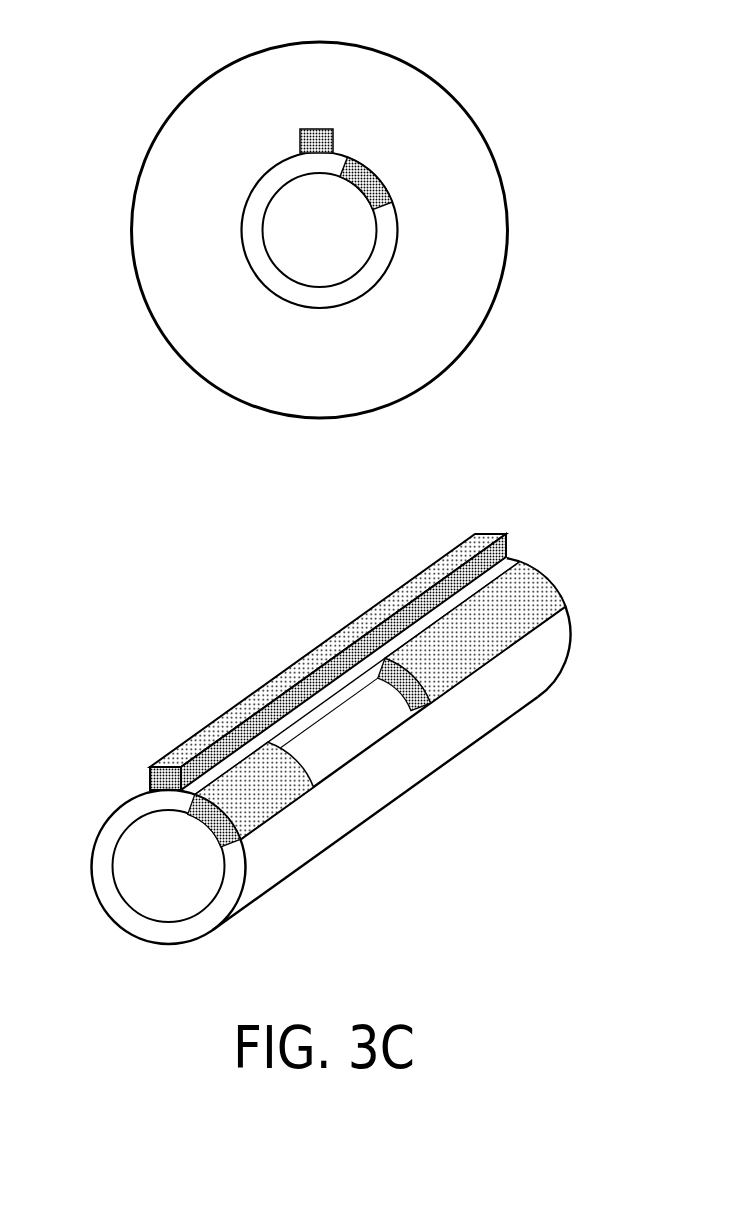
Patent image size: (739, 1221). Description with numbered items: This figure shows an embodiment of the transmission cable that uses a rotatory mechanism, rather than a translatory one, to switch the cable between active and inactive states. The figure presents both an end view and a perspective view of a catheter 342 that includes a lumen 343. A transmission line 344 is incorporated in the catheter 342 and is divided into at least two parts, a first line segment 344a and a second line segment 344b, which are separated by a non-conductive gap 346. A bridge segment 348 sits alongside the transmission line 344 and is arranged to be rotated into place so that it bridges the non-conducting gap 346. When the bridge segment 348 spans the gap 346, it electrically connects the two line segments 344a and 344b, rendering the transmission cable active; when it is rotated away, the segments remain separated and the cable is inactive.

The catheter 342 is at (152, 245).
The lumen 343 is at (338, 241).
The transmission line 344 is at (377, 173).
The first line segment 344a is at (263, 802).
The second line segment 344b is at (481, 647).
The non-conductive gap 346 is at (350, 739).
The bridge segment 348 is at (320, 130).